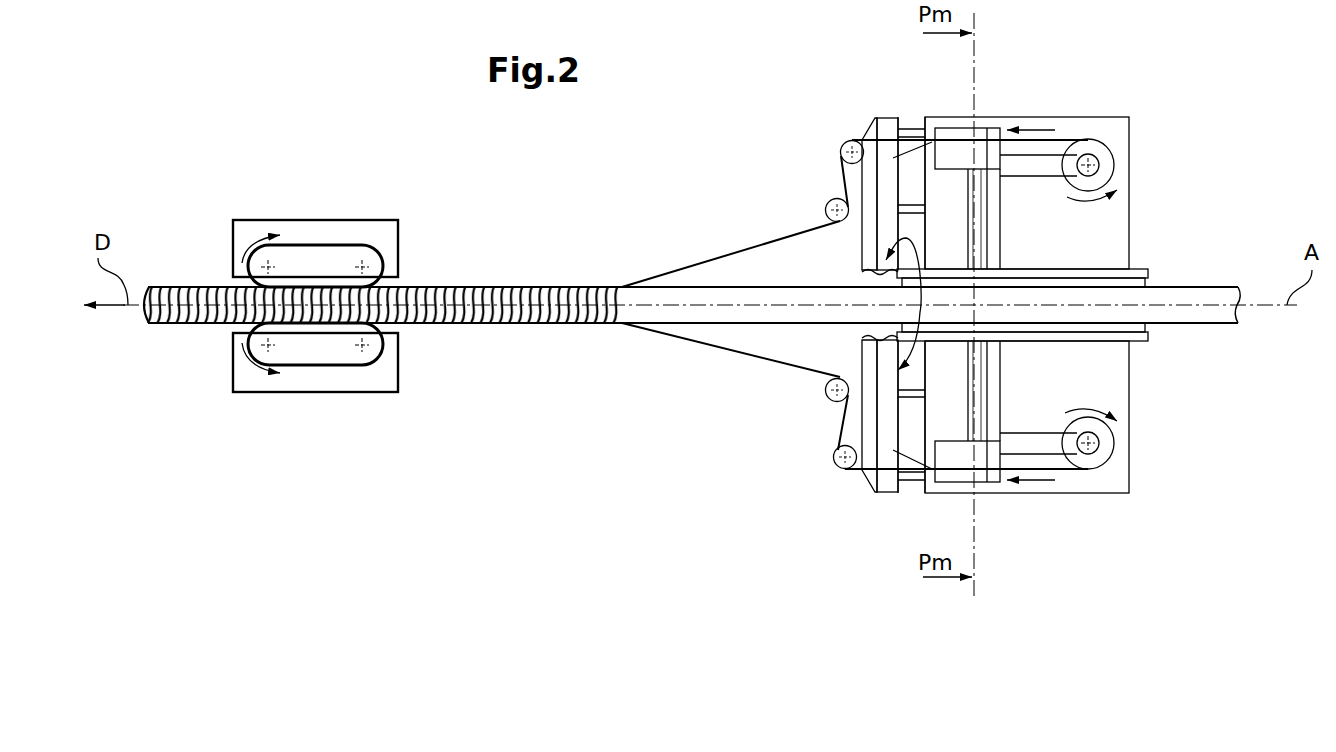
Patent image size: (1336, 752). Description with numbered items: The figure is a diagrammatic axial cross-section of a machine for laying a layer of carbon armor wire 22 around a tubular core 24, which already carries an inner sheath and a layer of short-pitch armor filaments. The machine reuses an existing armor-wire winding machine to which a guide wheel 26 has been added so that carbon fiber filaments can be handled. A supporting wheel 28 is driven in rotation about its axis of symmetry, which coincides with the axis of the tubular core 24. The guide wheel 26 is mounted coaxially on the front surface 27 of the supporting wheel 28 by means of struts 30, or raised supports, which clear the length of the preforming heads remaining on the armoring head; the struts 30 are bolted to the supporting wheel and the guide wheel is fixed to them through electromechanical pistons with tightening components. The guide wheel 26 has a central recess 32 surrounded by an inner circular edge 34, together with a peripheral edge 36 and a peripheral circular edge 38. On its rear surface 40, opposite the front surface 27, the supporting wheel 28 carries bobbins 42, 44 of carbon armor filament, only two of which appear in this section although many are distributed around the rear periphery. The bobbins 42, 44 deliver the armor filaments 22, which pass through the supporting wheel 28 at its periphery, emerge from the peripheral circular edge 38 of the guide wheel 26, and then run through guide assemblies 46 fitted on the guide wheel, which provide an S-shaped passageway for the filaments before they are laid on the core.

The carbon armor wire 22 is at (1070, 140).
The tubular core 24 is at (1207, 295).
The guide wheel 26 is at (872, 513).
The front surface 27 is at (915, 163).
The supporting wheel 28 is at (990, 510).
The struts 30 is at (913, 215).
The central recess 32 is at (857, 275).
The inner circular edge 34 is at (858, 373).
The peripheral edge 36 is at (887, 112).
The peripheral circular edge 38 is at (858, 118).
The rear surface 40 is at (1170, 188).
The bobbin 42 is at (1102, 162).
The bobbin 44 is at (1117, 445).
The guide assemblies 46 is at (823, 160).